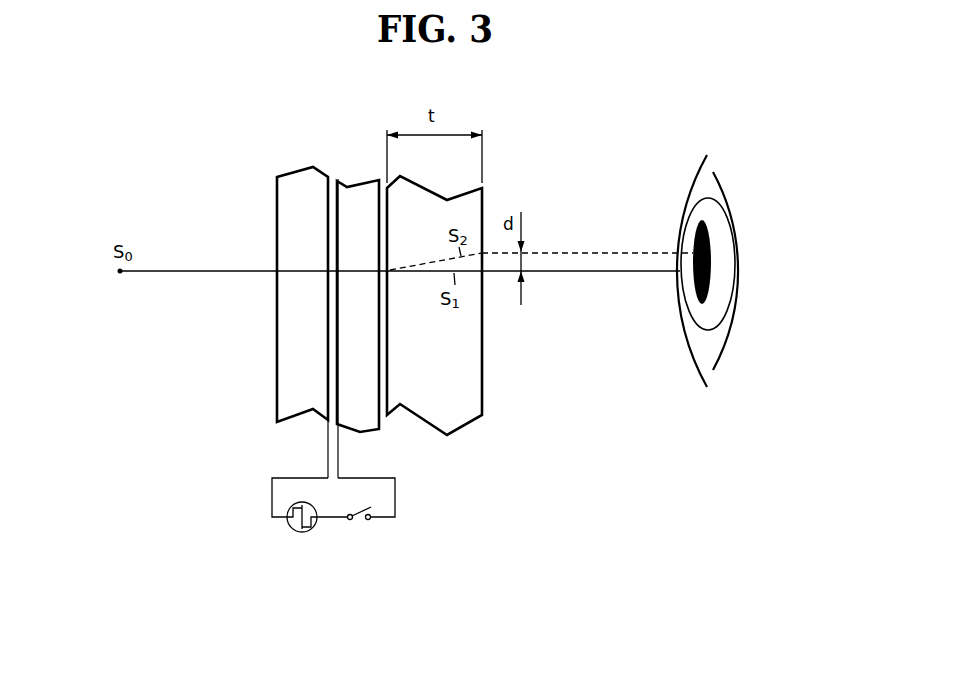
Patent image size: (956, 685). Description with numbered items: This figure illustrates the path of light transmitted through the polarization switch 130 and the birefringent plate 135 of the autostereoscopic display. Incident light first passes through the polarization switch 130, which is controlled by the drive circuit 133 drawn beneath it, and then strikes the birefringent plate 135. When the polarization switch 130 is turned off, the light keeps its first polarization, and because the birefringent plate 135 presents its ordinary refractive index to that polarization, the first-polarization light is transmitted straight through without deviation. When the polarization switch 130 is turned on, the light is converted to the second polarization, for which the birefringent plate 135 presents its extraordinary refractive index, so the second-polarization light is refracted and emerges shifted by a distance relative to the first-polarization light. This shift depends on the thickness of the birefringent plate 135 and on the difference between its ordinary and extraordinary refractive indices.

The polarization switch 130 is at (299, 166).
The voltage source and switch (drive circuit) 133 is at (272, 498).
The birefringent plate 135 is at (460, 436).